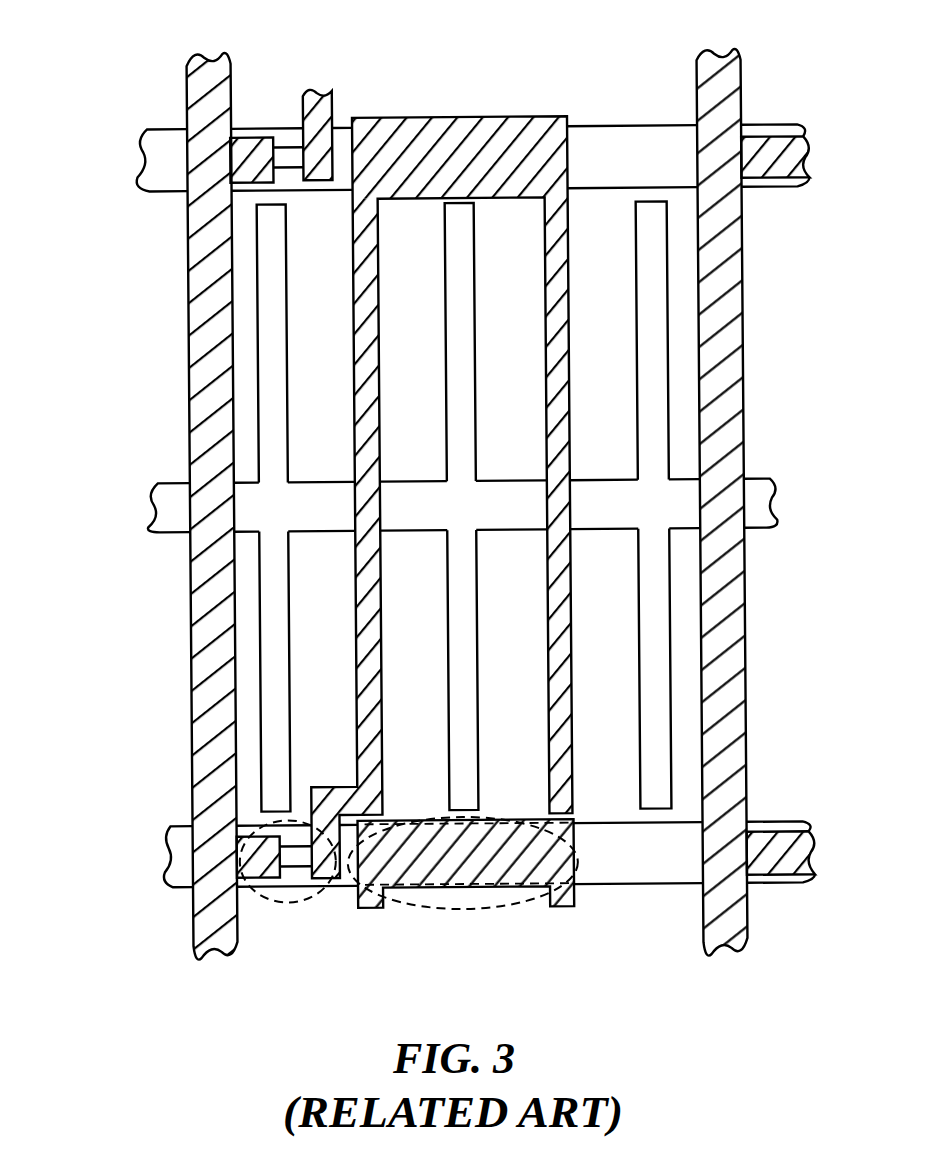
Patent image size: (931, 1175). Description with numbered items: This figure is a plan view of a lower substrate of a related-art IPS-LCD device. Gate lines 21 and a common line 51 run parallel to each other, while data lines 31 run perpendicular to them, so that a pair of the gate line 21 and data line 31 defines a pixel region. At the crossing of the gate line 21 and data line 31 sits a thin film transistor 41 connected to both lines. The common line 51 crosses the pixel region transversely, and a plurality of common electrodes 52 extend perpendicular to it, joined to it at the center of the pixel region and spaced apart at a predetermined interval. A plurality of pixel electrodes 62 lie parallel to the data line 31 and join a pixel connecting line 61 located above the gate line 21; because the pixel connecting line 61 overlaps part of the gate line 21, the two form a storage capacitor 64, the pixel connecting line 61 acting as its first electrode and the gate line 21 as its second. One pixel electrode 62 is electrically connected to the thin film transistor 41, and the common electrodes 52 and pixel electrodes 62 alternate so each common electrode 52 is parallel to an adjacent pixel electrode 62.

The gate line 21 is at (652, 868).
The data line 31 is at (200, 684).
The thin film transistor 41 is at (283, 898).
The common line 51 is at (604, 519).
The common electrode 52 is at (460, 228).
The pixel connecting line 61 is at (395, 124).
The pixel electrode 62 is at (355, 400).
The storage capacitor 64 is at (406, 903).